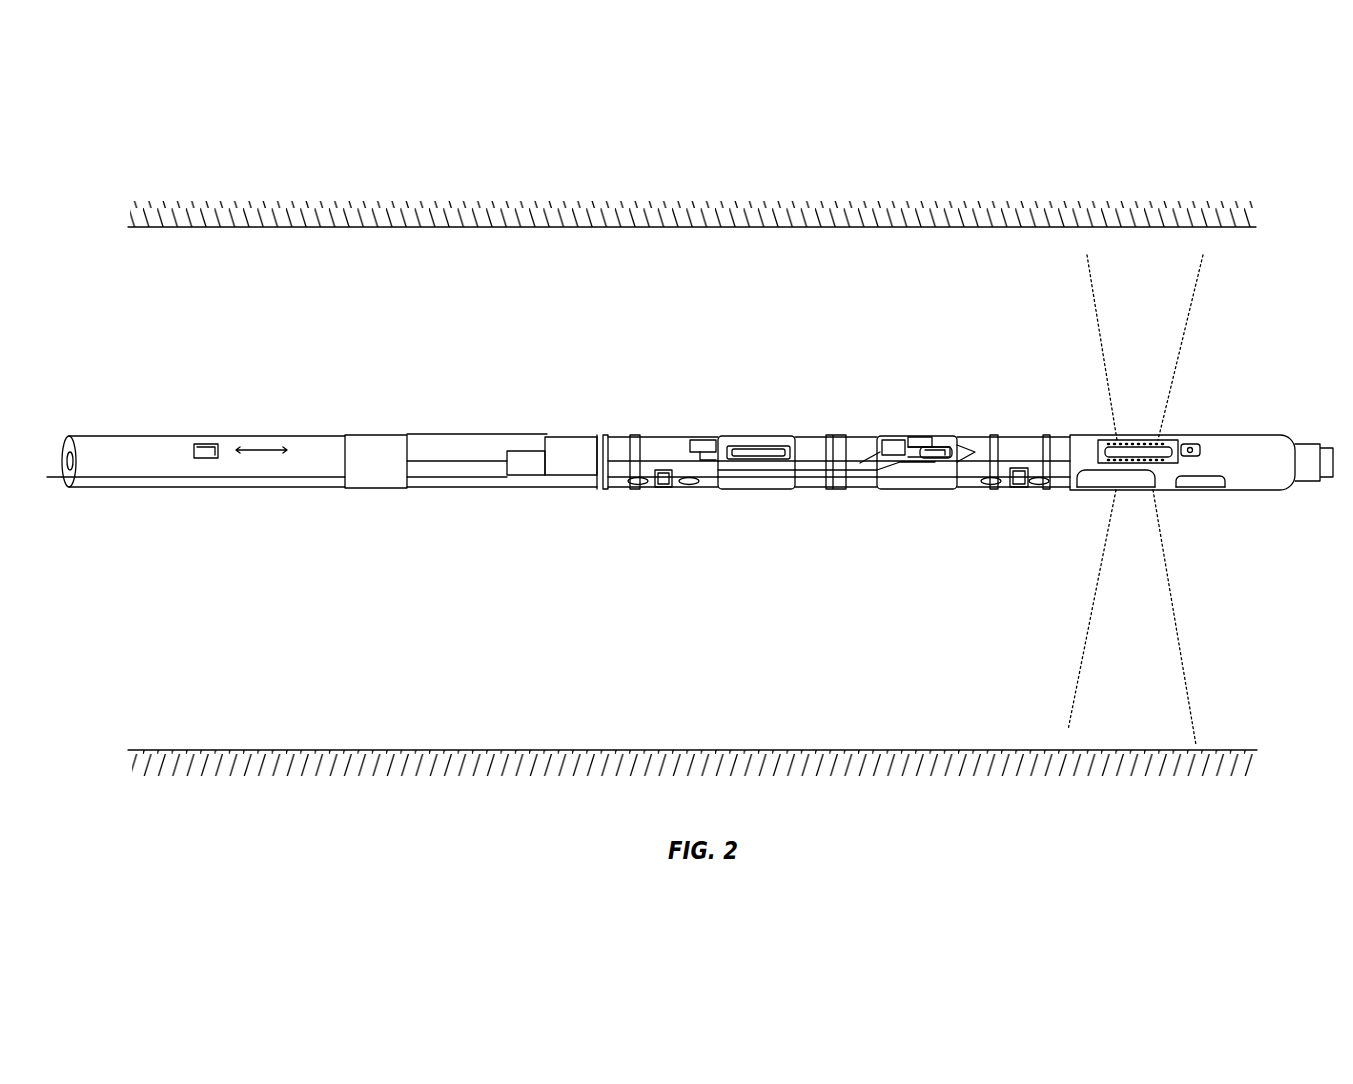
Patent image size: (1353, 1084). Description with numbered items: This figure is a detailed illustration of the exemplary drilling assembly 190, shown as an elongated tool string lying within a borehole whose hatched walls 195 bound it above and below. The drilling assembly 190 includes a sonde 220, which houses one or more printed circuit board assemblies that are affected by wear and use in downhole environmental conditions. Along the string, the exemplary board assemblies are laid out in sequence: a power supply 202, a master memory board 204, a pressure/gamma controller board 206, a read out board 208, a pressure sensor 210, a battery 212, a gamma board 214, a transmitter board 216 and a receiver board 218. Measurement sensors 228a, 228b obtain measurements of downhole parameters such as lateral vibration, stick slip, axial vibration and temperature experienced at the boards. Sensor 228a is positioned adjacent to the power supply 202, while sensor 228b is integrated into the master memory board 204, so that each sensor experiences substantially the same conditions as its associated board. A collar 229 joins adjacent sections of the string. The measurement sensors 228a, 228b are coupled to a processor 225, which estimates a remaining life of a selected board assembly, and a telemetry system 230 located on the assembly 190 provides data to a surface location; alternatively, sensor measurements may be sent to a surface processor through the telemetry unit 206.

The borehole 195 is at (520, 166).
The drilling assembly 190 is at (208, 409).
The sonde 220 is at (232, 464).
The telemetry system 230 is at (378, 436).
The processor 225 is at (522, 444).
The measurement sensor 228a is at (708, 438).
The power supply 202 is at (752, 434).
The collar 229 is at (890, 437).
The master memory board 204 is at (932, 434).
The receiver board 218 is at (741, 498).
The transmitter board 216 is at (903, 498).
The measurement sensor 228b is at (932, 468).
The pressure/gamma controller board 206 is at (1115, 434).
The read out board 208 is at (1190, 434).
The gamma board 214 is at (1100, 491).
The battery 212 is at (1185, 496).
The pressure sensor 210 is at (1215, 498).